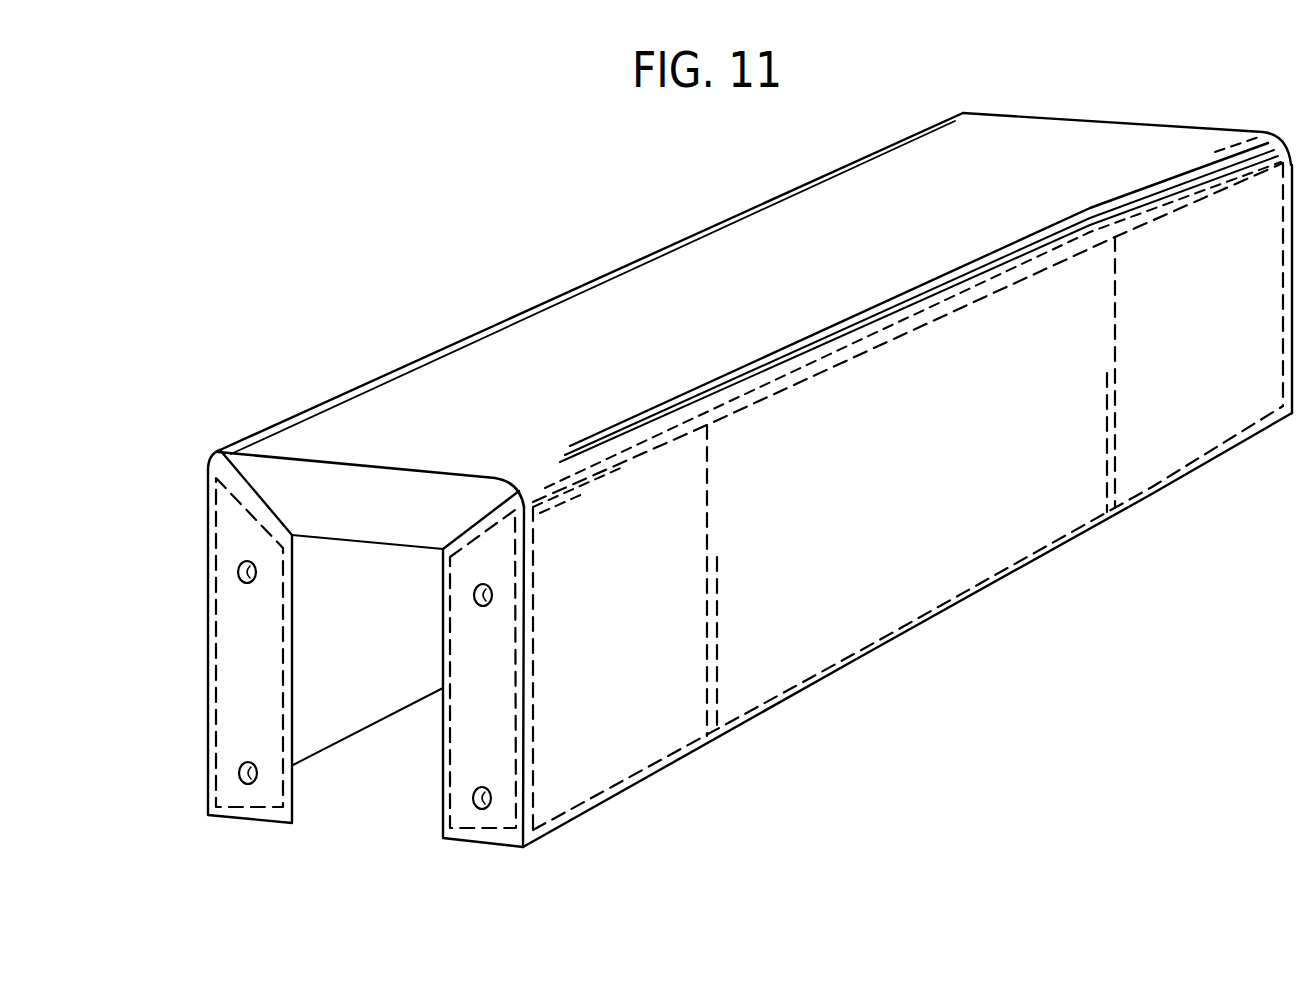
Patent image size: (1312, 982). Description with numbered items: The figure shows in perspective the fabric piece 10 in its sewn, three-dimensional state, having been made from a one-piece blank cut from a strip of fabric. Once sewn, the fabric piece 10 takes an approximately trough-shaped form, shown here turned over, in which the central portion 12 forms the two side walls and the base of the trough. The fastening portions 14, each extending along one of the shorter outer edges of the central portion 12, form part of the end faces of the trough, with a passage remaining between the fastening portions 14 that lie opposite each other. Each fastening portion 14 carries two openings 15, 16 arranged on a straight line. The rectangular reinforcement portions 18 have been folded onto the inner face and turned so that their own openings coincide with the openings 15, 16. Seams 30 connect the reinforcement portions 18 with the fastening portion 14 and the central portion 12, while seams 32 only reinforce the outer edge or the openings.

The fabric piece 10 is at (659, 226).
The central portion 12 is at (880, 598).
The fastening portion 14 is at (466, 742).
The opening 15 is at (248, 786).
The opening 16 is at (240, 575).
The reinforcement portion 18 is at (652, 730).
The seam 30 is at (707, 542).
The seam 32 is at (978, 585).